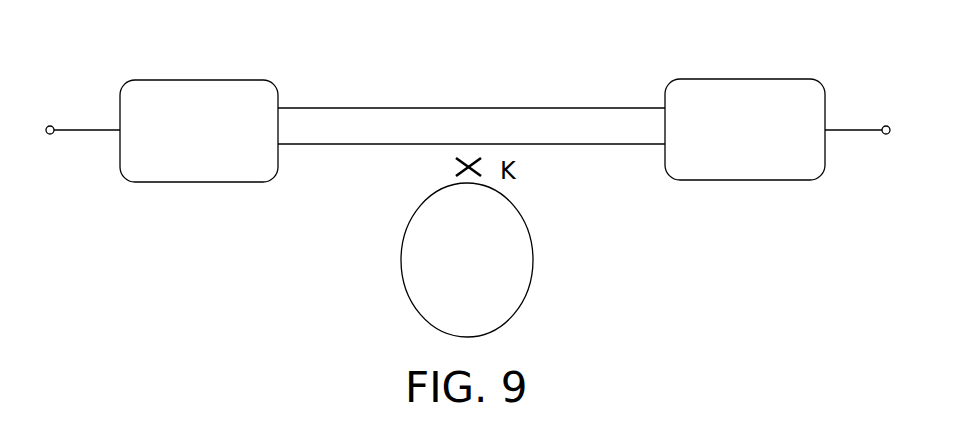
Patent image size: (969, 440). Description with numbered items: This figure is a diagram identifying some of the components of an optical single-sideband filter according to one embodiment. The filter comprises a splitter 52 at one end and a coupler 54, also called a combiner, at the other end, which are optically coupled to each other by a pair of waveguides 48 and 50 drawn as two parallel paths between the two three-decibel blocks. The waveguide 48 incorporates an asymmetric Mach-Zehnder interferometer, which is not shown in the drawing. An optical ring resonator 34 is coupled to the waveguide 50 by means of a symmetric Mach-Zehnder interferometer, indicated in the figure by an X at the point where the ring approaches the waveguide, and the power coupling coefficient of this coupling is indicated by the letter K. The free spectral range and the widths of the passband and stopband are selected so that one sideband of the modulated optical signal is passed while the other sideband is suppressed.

The splitter 52 is at (181, 80).
The coupler 54 is at (715, 78).
The waveguide 48 is at (342, 108).
The waveguide 50 is at (368, 144).
The optical ring resonator 34 is at (528, 288).